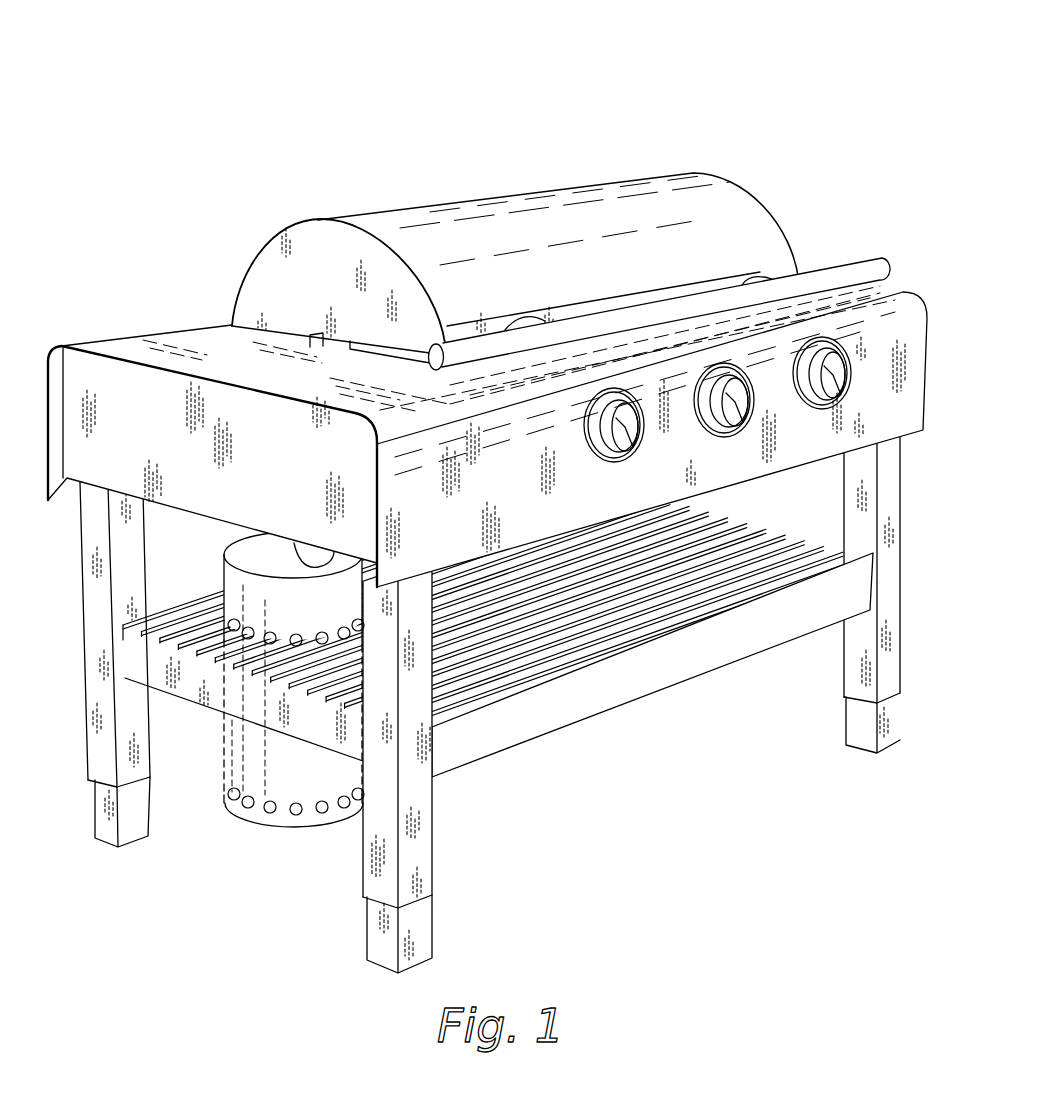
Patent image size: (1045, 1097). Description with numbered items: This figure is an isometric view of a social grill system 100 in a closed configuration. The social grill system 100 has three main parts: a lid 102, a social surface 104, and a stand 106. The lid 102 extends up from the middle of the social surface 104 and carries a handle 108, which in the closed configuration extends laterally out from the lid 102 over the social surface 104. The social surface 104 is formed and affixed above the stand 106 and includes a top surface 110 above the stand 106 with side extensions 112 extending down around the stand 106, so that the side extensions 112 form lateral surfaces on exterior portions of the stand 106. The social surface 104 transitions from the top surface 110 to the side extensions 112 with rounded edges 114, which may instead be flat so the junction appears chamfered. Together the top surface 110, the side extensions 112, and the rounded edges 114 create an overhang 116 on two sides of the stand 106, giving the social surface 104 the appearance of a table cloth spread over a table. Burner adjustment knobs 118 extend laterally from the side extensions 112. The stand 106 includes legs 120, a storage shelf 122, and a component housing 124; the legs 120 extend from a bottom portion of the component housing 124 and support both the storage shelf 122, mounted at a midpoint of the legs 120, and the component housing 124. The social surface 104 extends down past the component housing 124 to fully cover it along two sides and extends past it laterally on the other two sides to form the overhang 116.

The social grill system 100 is at (156, 74).
The lid 102 is at (728, 192).
The social surface 104 is at (161, 310).
The stand 106 is at (58, 742).
The handle 108 is at (618, 313).
The top surface 110 is at (215, 333).
The side extensions 112 is at (547, 522).
The rounded edges 114 is at (907, 293).
The overhang 116 is at (110, 357).
The burner adjustment knobs 118 is at (742, 410).
The legs 120 is at (423, 833).
The storage shelf 122 is at (855, 558).
The component housing 124 is at (270, 493).